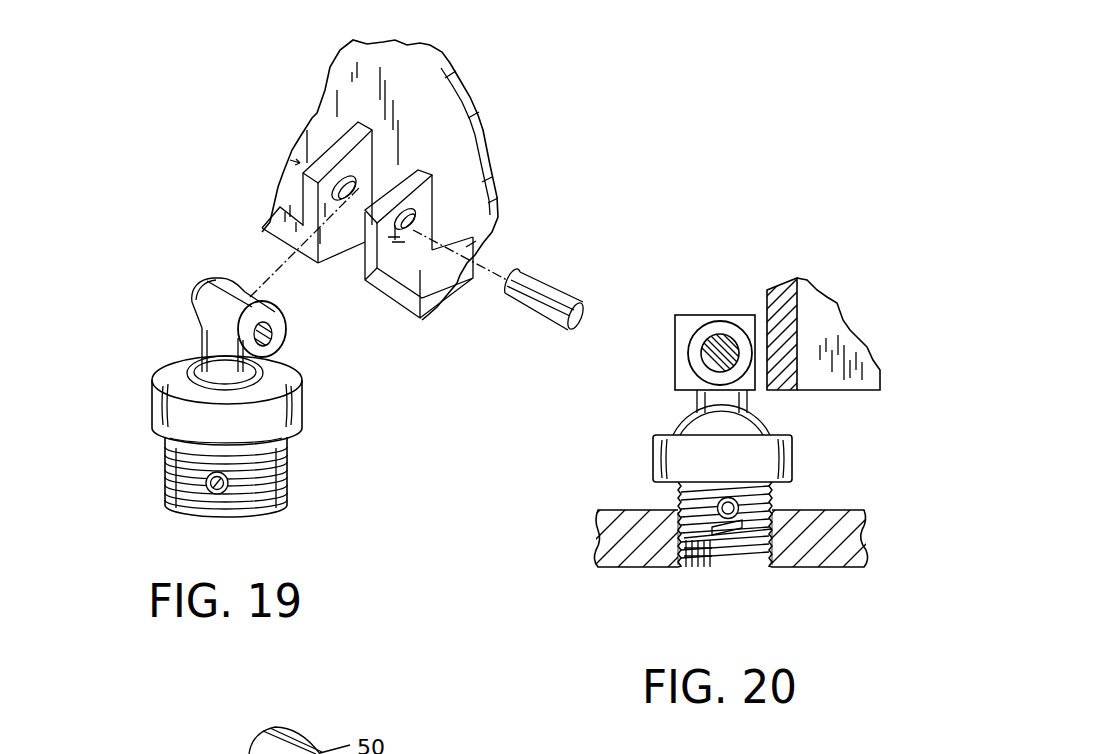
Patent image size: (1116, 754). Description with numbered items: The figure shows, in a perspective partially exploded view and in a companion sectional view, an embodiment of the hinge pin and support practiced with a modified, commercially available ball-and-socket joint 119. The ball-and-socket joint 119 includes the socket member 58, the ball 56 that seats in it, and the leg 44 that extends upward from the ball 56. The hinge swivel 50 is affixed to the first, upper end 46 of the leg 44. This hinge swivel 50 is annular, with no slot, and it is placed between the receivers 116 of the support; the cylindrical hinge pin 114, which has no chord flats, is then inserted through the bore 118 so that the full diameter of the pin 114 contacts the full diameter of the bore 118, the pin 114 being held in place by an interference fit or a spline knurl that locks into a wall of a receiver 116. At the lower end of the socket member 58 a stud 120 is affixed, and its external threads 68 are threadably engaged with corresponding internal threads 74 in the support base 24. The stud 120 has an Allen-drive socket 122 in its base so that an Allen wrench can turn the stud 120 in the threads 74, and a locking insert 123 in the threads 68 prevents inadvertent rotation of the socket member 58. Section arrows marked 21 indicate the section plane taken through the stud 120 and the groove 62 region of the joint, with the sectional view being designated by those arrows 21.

In FIG. 20, the section line 21- 21 is at (787, 622).
In FIG. 20, the support base 24 is at (602, 527).
In FIG. 19, the leg 44 is at (207, 345).
In FIG. 19, the first (upper) end of the leg 46 is at (233, 290).
In FIG. 19, the hinge swivel 50 is at (257, 303).
In FIG. 20, the hinge swivel 50 is at (697, 330).
In FIG. 19, the ball 56 is at (182, 370).
In FIG. 19, the socket member 58 is at (295, 402).
In FIG. 20, the socket member 58 is at (792, 453).
In FIG. 19, the undercut 62 is at (280, 437).
In FIG. 19, the threads 68 is at (180, 502).
In FIG. 20, the internal threads 74 is at (805, 517).
In FIG. 19, the hinge pin 114 is at (533, 307).
In FIG. 19, the receivers 116 is at (405, 170).
In FIG. 20, the receivers 116 is at (734, 314).
In FIG. 19, the bore 118 is at (428, 210).
In FIG. 20, the bore 118 is at (703, 352).
In FIG. 19, the ball-and-socket joint 119 is at (133, 436).
In FIG. 20, the ball-and-socket joint 119 is at (618, 447).
In FIG. 19, the stud 120 is at (287, 478).
In FIG. 20, the stud 120 is at (703, 519).
In FIG. 20, the Allen-drive socket 122 is at (733, 531).
In FIG. 19, the locking insert 123 is at (183, 510).
In FIG. 20, the locking insert 123 is at (772, 500).